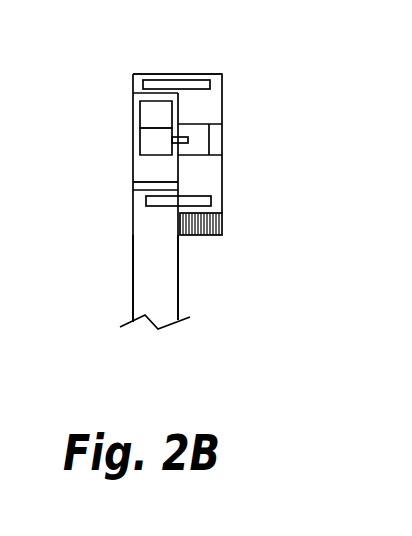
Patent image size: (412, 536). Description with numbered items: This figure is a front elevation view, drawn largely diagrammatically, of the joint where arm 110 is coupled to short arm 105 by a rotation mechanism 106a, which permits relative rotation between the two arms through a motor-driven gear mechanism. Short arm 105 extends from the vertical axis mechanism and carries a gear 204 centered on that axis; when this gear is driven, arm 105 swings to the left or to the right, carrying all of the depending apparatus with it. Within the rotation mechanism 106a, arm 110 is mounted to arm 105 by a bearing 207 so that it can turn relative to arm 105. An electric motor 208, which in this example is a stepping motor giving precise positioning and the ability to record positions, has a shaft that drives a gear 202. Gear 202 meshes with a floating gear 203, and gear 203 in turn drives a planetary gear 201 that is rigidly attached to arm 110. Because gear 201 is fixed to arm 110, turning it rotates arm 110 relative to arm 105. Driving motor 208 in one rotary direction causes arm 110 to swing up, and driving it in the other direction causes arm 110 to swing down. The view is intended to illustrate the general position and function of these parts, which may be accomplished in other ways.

The rotation mechanism 106a is at (230, 102).
The short arm 105 is at (205, 73).
The bearing 207 is at (158, 80).
The floating gear 203 is at (140, 113).
The gear 202 is at (140, 143).
The electric motor 208 is at (200, 148).
The planetary gear 201 is at (140, 185).
The gear 204 is at (222, 220).
The arm 110 is at (138, 277).